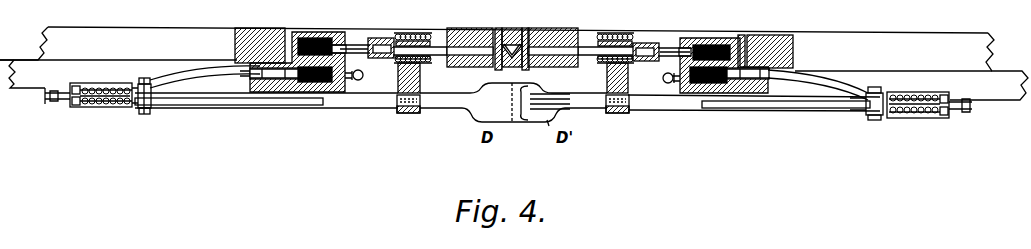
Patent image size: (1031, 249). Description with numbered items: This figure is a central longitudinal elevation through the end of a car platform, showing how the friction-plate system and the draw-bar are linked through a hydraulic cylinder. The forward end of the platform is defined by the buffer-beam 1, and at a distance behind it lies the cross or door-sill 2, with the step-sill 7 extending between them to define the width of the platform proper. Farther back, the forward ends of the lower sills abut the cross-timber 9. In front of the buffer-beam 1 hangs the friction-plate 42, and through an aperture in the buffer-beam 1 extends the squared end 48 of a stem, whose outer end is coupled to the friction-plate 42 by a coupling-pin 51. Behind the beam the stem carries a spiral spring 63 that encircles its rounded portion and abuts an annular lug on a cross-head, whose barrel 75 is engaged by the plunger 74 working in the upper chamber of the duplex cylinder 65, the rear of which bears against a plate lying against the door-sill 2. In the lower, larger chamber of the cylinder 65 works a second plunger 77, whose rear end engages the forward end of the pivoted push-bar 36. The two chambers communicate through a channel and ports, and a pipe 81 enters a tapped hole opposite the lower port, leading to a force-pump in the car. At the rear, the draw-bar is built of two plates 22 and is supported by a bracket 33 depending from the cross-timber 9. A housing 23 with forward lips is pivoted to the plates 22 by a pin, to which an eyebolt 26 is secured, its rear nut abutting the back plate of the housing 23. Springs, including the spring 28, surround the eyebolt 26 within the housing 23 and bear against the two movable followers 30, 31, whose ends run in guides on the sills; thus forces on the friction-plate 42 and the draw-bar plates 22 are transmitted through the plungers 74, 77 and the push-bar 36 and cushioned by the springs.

The buffer-beam 1 is at (455, 30).
The door-sill 2 is at (268, 23).
The step-sill 7 is at (566, 30).
The cross-timber 9 is at (421, 83).
The plates 22 is at (281, 106).
The housing 23 is at (99, 108).
The eyebolt 26 is at (139, 110).
The spring 28 is at (915, 117).
The follower 30 is at (510, 109).
The follower 31 is at (884, 122).
The bracket 33 is at (513, 114).
The push-bar 36 is at (201, 79).
The friction-plate 42 is at (508, 48).
The squared end 48 is at (513, 66).
The coupling-pin 51 is at (498, 28).
The spiral spring 63 is at (646, 36).
The duplex cylinder 65 is at (305, 33).
The plunger 74 is at (356, 46).
The barrel 75 is at (380, 40).
The plunger 77 is at (274, 72).
The pipe 81 is at (512, 80).